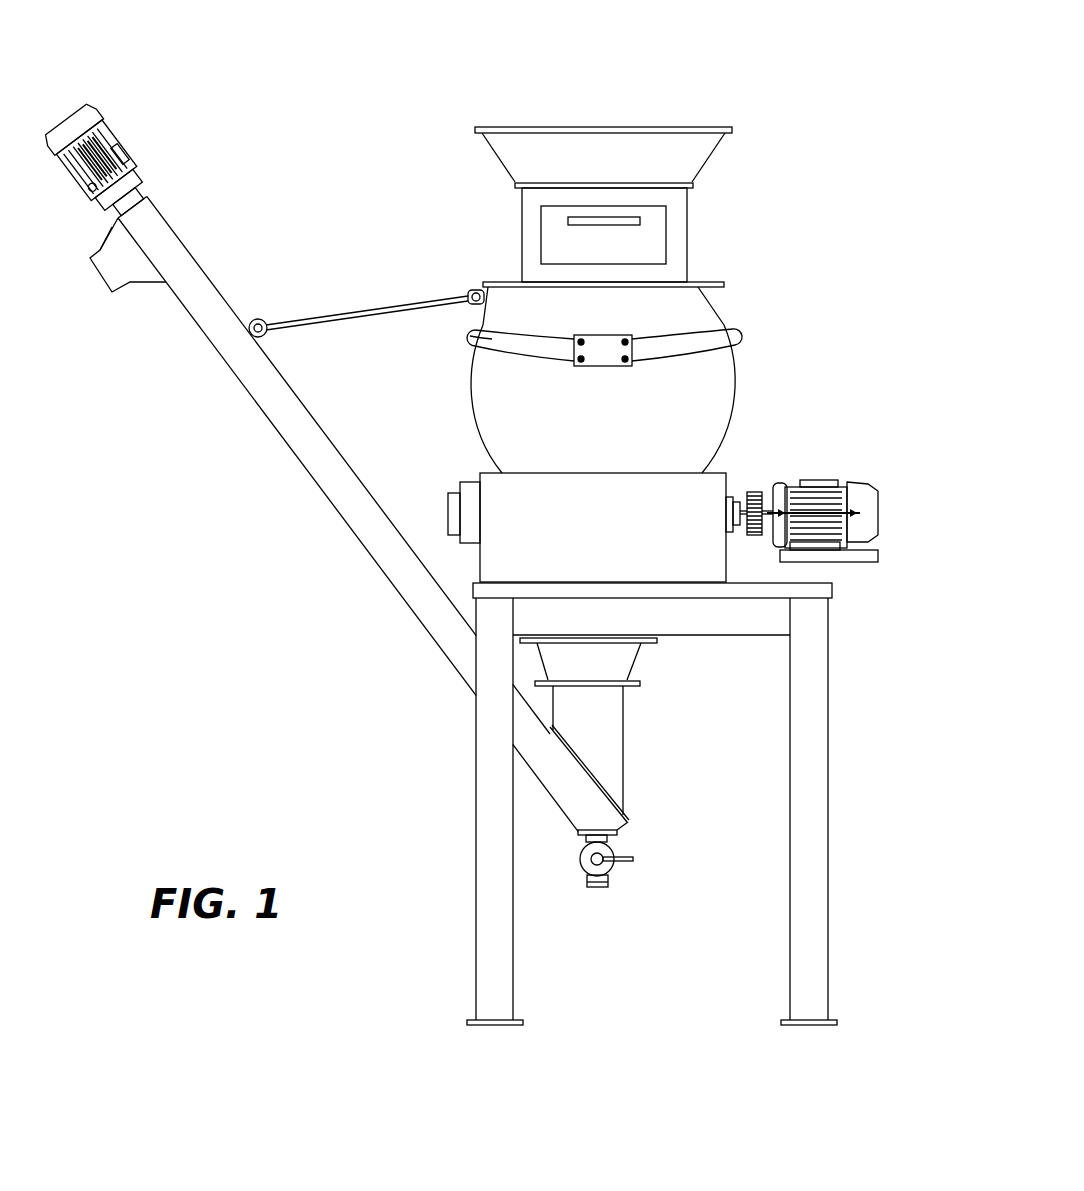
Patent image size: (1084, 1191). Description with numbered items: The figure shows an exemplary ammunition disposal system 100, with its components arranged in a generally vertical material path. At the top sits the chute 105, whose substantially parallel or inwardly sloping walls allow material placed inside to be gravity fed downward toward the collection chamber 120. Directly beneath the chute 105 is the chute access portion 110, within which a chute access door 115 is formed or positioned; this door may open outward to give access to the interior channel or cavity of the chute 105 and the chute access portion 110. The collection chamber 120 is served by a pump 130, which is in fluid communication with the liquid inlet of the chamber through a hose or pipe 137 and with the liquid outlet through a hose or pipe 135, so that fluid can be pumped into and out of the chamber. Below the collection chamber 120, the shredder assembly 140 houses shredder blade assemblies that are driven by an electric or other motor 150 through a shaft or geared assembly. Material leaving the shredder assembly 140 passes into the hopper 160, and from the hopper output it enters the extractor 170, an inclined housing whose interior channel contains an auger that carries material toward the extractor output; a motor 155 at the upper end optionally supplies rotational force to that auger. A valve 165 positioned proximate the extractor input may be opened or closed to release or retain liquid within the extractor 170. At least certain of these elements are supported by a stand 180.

The ammunition disposal system 100 is at (261, 68).
The chute 105 is at (692, 150).
The chute access portion 110 is at (678, 237).
The chute access door 115 is at (558, 236).
The collection chamber 120 is at (712, 398).
The pump 130 is at (612, 343).
The hose or pipe 135 is at (687, 348).
The hose or pipe 137 is at (467, 333).
The shredder assembly 140 is at (503, 495).
The motor 150 is at (836, 478).
The motor 155 is at (128, 157).
The hopper 160 is at (612, 667).
The valve 165 is at (608, 867).
The extractor 170 is at (268, 394).
The stand 180 is at (808, 872).